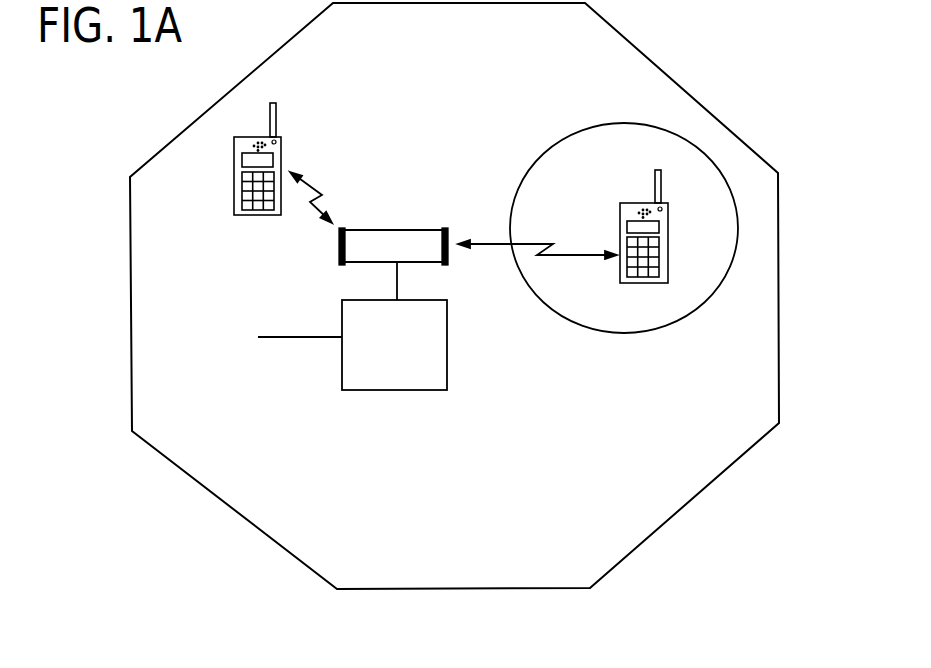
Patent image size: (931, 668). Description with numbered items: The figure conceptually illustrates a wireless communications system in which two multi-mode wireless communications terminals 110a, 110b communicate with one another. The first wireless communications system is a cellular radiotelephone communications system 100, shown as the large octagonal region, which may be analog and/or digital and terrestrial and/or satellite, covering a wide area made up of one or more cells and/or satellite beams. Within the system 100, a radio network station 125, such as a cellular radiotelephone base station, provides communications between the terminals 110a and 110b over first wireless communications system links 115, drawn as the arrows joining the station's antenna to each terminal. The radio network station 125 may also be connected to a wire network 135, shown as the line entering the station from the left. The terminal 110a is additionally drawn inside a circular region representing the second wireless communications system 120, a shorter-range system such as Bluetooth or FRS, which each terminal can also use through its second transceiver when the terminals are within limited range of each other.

The cellular radiotelephone communications system 100 is at (728, 125).
The multi-mode wireless communications terminal 110a is at (623, 215).
The multi-mode wireless communications terminal 110b is at (282, 143).
The first wireless communications system link 115 is at (315, 191).
The second wireless communications system 120 is at (668, 326).
The radio network station 125 is at (417, 390).
The wire network 135 is at (282, 337).